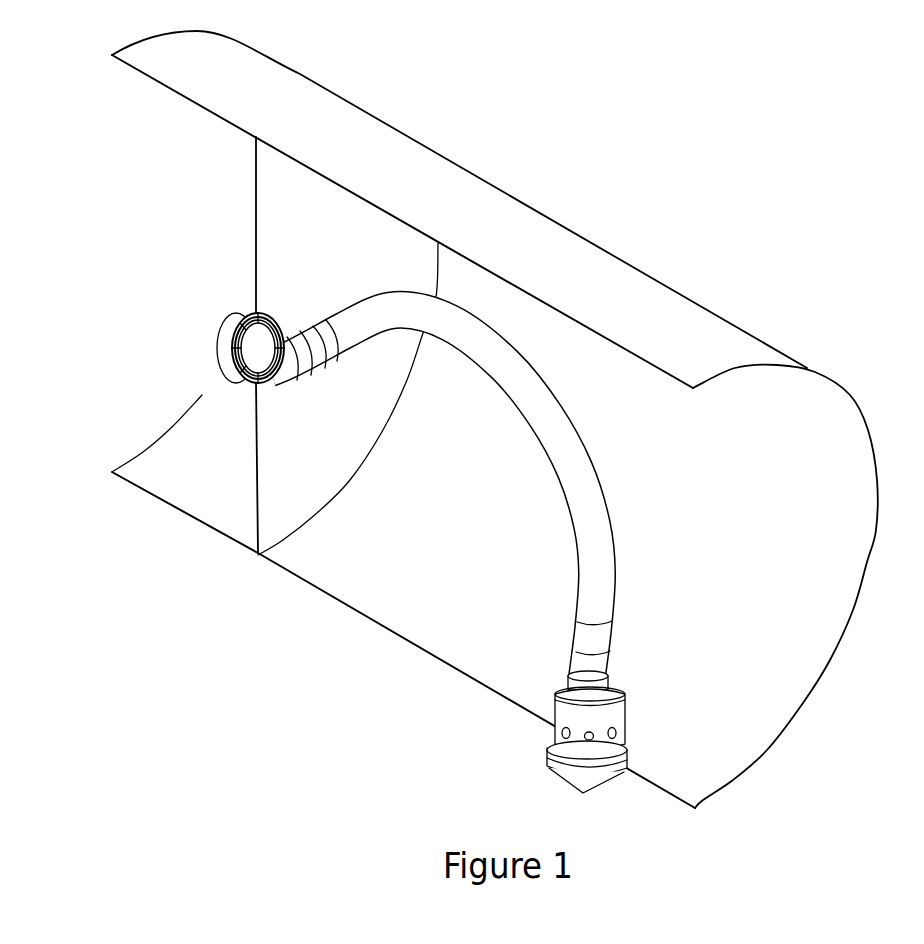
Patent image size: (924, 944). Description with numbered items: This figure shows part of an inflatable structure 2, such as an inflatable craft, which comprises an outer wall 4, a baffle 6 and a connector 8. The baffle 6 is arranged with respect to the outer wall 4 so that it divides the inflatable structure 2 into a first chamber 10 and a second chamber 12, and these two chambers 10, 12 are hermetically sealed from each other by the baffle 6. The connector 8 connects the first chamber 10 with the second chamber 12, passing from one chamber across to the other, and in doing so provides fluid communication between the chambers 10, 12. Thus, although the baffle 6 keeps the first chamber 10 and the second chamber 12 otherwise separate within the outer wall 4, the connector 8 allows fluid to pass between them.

The inflatable structure 2 is at (491, 419).
The outer wall 4 is at (743, 340).
The baffle 6 is at (307, 237).
The connector 8 is at (608, 545).
The first chamber 10 is at (482, 538).
The second chamber 12 is at (238, 462).